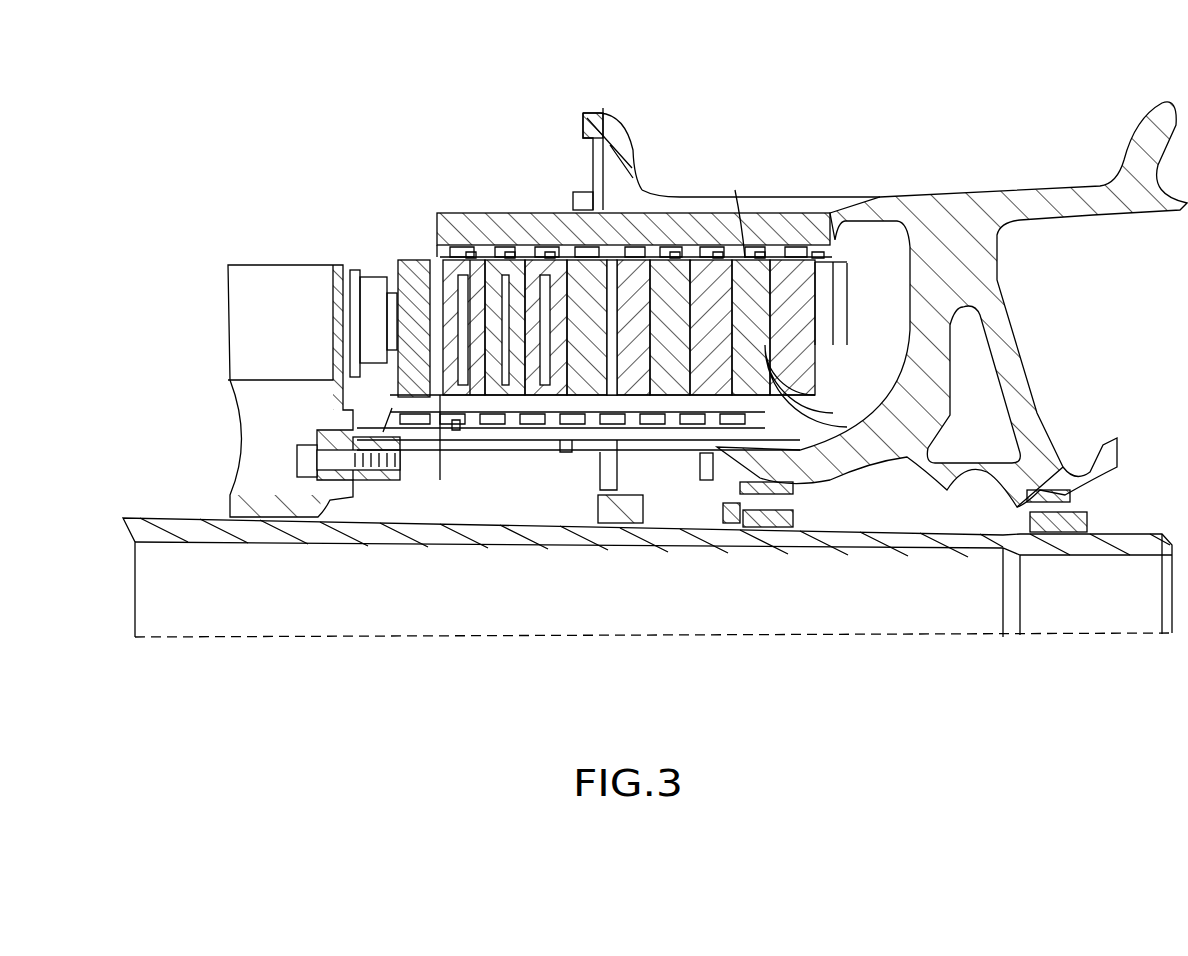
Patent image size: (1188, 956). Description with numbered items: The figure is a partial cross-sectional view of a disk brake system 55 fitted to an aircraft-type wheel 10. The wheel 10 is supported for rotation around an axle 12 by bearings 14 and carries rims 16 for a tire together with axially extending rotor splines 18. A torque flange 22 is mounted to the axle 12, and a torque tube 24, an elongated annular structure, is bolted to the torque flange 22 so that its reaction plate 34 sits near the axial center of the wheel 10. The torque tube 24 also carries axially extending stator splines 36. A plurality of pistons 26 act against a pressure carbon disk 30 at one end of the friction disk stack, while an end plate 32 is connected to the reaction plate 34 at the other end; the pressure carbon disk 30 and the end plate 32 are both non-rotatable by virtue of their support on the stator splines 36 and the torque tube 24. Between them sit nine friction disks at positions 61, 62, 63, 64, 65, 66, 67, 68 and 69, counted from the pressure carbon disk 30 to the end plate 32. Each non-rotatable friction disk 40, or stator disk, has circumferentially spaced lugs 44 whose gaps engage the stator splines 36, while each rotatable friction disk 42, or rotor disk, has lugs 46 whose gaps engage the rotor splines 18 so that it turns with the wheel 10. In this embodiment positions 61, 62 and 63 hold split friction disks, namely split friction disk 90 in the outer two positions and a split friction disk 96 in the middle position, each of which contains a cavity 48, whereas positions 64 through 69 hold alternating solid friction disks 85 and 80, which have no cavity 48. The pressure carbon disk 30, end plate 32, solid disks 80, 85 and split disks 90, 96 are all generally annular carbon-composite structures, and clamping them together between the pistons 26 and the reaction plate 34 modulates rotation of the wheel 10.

The wheel 10 is at (1003, 163).
The axle 12 is at (930, 540).
The bearings 14 is at (793, 506).
The rims 16 is at (628, 135).
The rotor splines 18 is at (563, 212).
The torque flange 22 is at (338, 425).
The torque tube 24 is at (495, 452).
The pistons 26 is at (372, 275).
The pressure carbon disk 30 is at (410, 258).
The end plate 32 is at (878, 195).
The reaction plate 34 is at (855, 352).
The stator splines 36 is at (560, 440).
The non-rotatable friction disk 40 is at (522, 450).
The rotatable friction disk 42 is at (452, 258).
The lugs 44 is at (465, 432).
The lugs 46 is at (464, 272).
The cavity 48 is at (502, 337).
The disk brake system 55 is at (372, 240).
The friction disk position 61 is at (470, 256).
The friction disk position 62 is at (510, 256).
The friction disk position 63 is at (550, 256).
The friction disk position 64 is at (582, 195).
The friction disk position 65 is at (601, 115).
The friction disk position 66 is at (675, 256).
The friction disk position 67 is at (718, 256).
The friction disk position 68 is at (760, 256).
The friction disk position 69 is at (818, 256).
The solid friction disk 80 is at (645, 440).
The solid friction disk 85 is at (598, 440).
The split friction disk 90 is at (472, 385).
The seal ring 96 is at (597, 505).